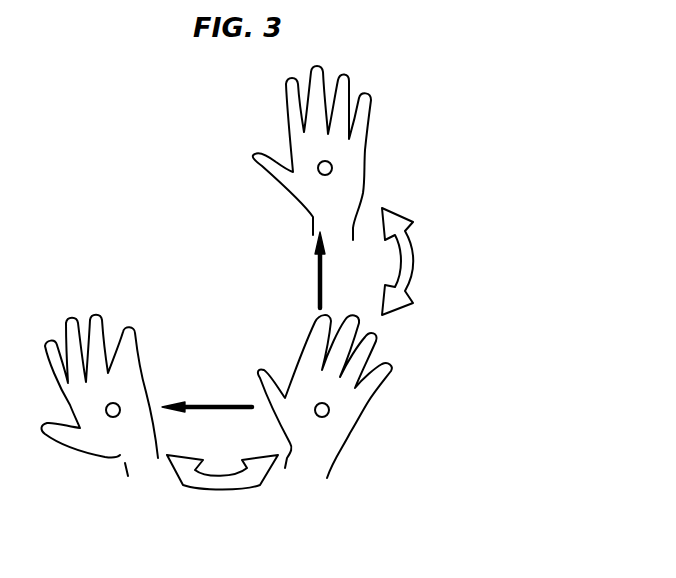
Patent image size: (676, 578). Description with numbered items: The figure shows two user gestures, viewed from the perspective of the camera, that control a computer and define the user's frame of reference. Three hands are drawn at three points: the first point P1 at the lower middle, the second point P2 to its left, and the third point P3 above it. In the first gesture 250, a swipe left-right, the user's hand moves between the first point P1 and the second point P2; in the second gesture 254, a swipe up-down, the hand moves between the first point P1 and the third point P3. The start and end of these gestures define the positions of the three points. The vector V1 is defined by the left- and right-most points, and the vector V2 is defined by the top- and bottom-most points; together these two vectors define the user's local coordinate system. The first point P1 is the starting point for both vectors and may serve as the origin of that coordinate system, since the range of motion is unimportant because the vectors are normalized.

The first point P1 is at (329, 413).
The second point P2 is at (108, 416).
The third point P3 is at (332, 166).
The first gesture 250 is at (232, 476).
The second gesture 254 is at (412, 229).
The vector V1 is at (224, 367).
The vector V2 is at (301, 267).